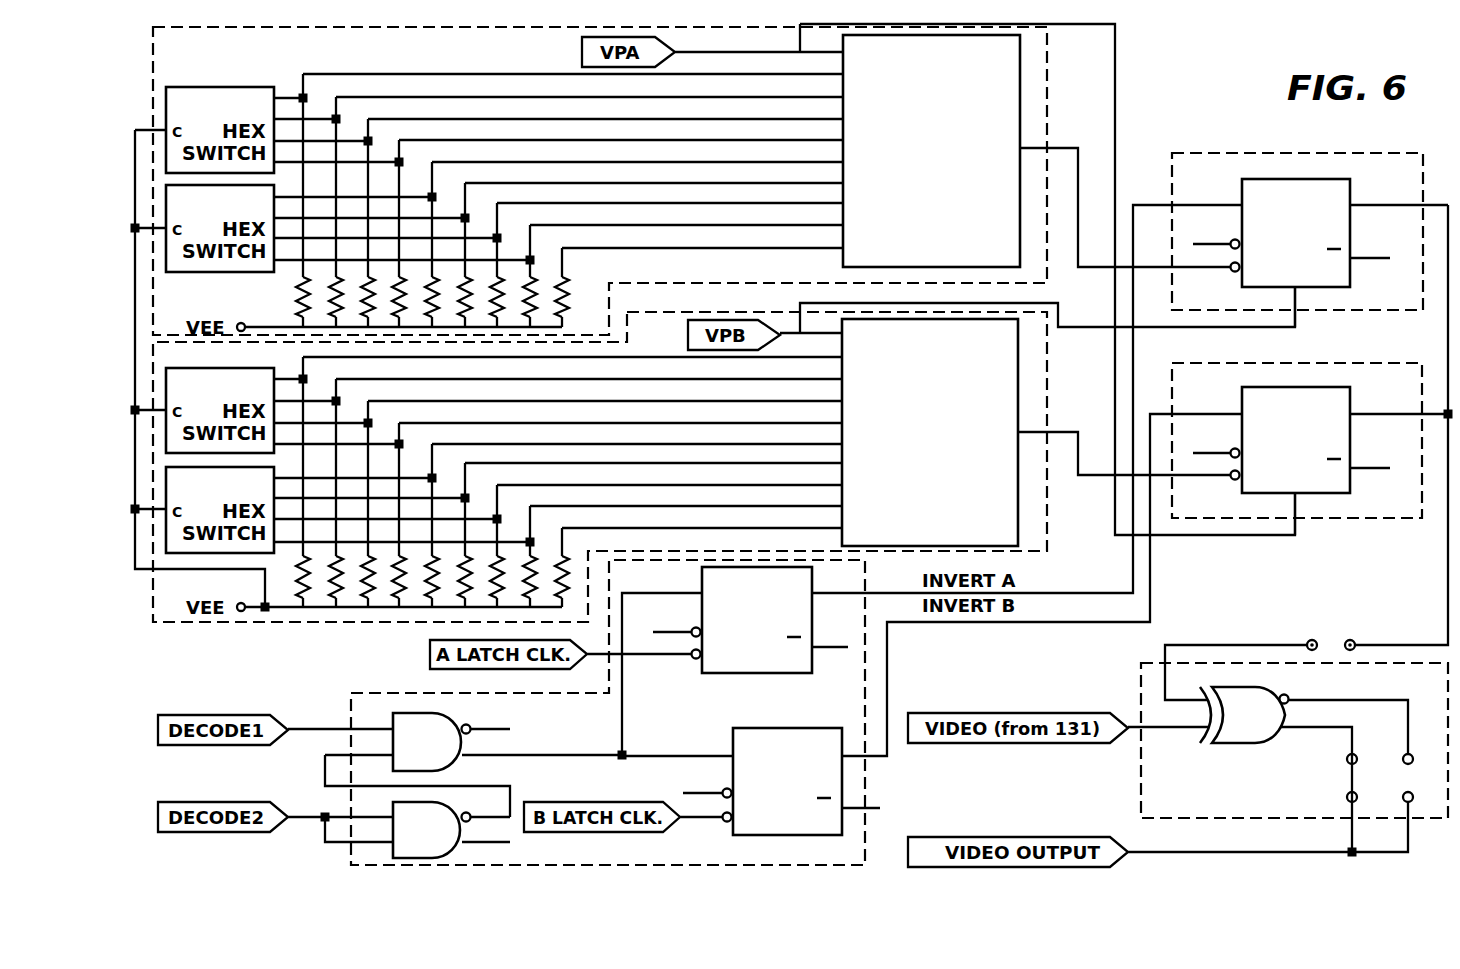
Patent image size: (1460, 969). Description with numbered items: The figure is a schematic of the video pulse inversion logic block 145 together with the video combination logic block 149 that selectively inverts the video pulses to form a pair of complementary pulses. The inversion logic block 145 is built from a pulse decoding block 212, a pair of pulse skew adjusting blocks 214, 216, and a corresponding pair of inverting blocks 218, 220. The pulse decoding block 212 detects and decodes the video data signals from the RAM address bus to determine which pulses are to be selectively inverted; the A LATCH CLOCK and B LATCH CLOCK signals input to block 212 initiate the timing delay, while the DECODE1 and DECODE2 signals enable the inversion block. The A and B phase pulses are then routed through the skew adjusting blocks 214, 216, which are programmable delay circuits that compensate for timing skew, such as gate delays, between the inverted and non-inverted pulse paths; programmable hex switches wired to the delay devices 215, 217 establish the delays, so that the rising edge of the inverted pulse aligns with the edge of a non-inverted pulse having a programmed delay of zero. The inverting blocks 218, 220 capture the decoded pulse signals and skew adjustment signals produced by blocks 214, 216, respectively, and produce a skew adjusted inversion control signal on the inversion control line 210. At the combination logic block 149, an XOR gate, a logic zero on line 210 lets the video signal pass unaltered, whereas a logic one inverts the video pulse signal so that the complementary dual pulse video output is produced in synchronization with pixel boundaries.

The video pulse inversion logic block 145 is at (1160, 51).
The pulse skew adjusting block 214 is at (1048, 75).
The delay device 215 is at (1046, 43).
The pulse skew adjusting block 216 is at (1047, 342).
The delay device 217 is at (1018, 498).
The inverting block 218 is at (1222, 152).
The inverting block 220 is at (1357, 362).
The pulse decoding block 212 is at (427, 692).
The video combination logic block 149 is at (1150, 662).
The inversion control line 210 is at (1447, 566).